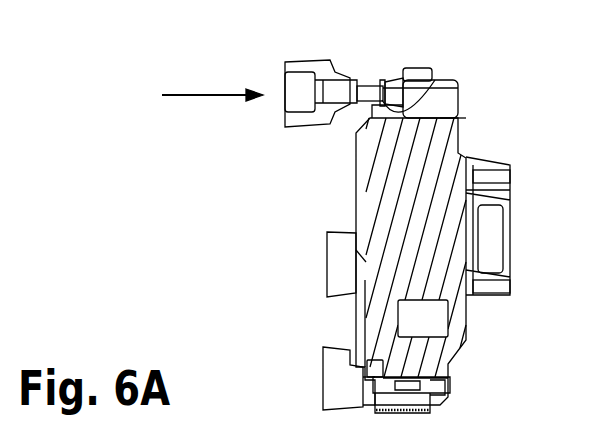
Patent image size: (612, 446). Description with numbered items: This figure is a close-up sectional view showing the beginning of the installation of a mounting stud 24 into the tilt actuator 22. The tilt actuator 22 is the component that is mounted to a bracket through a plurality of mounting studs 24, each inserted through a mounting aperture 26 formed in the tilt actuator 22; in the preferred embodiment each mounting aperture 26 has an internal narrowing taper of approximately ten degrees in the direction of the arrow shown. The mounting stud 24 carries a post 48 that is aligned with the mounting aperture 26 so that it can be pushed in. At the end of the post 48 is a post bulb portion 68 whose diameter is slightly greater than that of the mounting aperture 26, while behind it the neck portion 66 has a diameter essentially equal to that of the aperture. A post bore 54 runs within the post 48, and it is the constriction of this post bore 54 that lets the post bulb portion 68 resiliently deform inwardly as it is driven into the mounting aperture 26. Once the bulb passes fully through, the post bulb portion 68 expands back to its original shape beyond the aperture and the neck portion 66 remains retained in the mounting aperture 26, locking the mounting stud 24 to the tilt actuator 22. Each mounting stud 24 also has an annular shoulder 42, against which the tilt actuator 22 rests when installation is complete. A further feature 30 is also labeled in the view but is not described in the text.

The tilt actuator 22 is at (458, 162).
The mounting stud 24 is at (305, 68).
The mounting aperture 26 is at (452, 85).
The latch 30 is at (402, 80).
The annular shoulder 42 is at (364, 78).
The post 48 is at (374, 78).
The post bore 54 is at (381, 78).
The neck portion 66 is at (452, 116).
The post bulb portion 68 is at (435, 83).